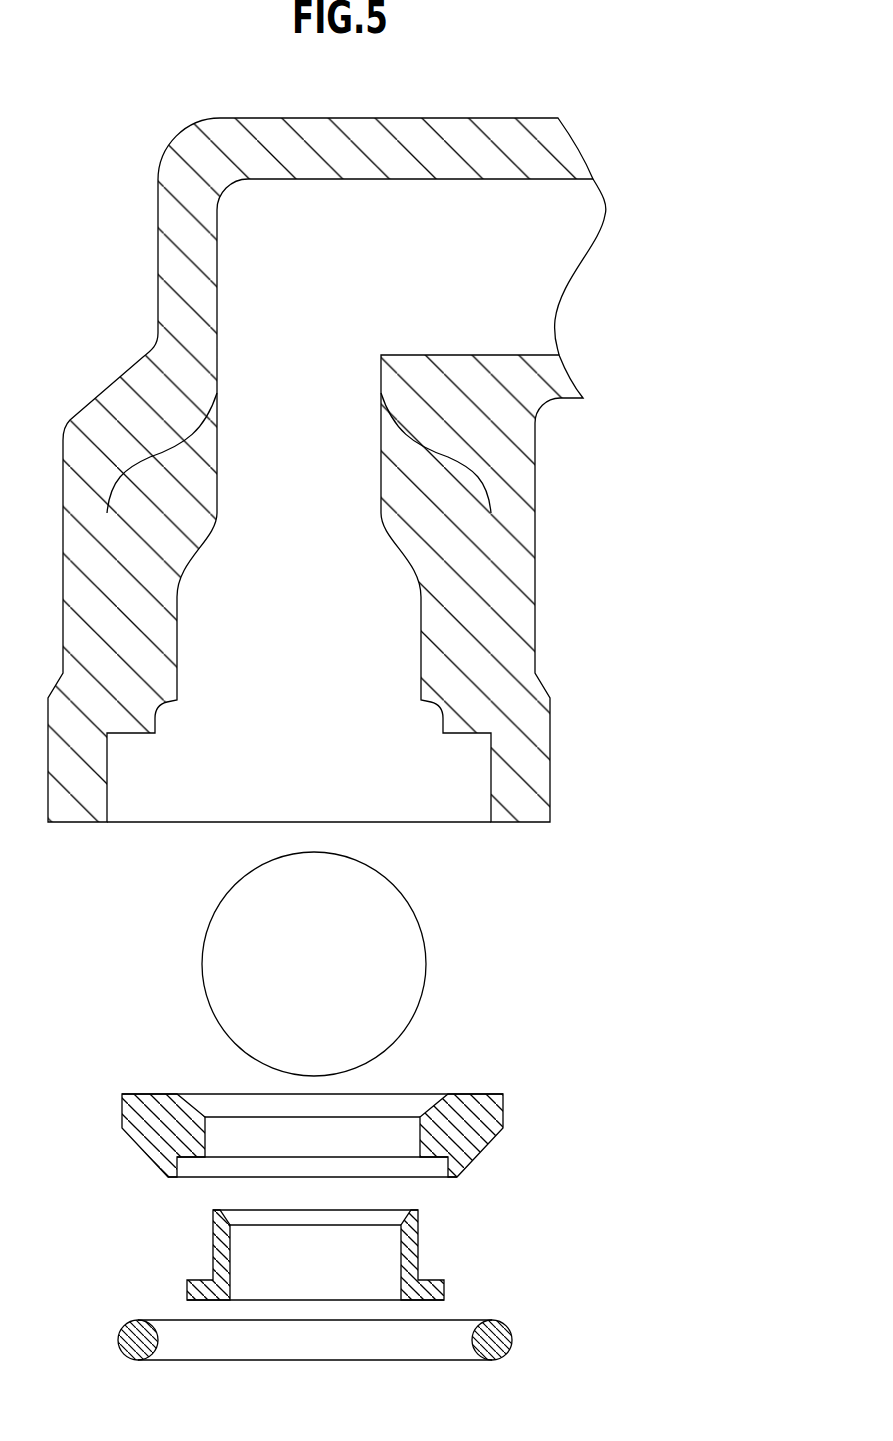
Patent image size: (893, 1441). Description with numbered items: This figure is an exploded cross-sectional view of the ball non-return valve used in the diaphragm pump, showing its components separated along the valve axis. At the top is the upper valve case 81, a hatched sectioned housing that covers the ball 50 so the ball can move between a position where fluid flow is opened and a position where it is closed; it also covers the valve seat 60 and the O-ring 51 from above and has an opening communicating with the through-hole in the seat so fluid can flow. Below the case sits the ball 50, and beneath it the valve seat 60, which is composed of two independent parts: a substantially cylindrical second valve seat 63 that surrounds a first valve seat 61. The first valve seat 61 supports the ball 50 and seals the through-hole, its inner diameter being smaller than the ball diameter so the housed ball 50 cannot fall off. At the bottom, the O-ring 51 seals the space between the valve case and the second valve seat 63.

The upper valve case 81 is at (517, 660).
The ball 50 is at (373, 965).
The valve seat 60 is at (435, 1173).
The second valve seat 63 is at (453, 1130).
The first valve seat 61 is at (420, 1245).
The O-ring 51 is at (498, 1328).